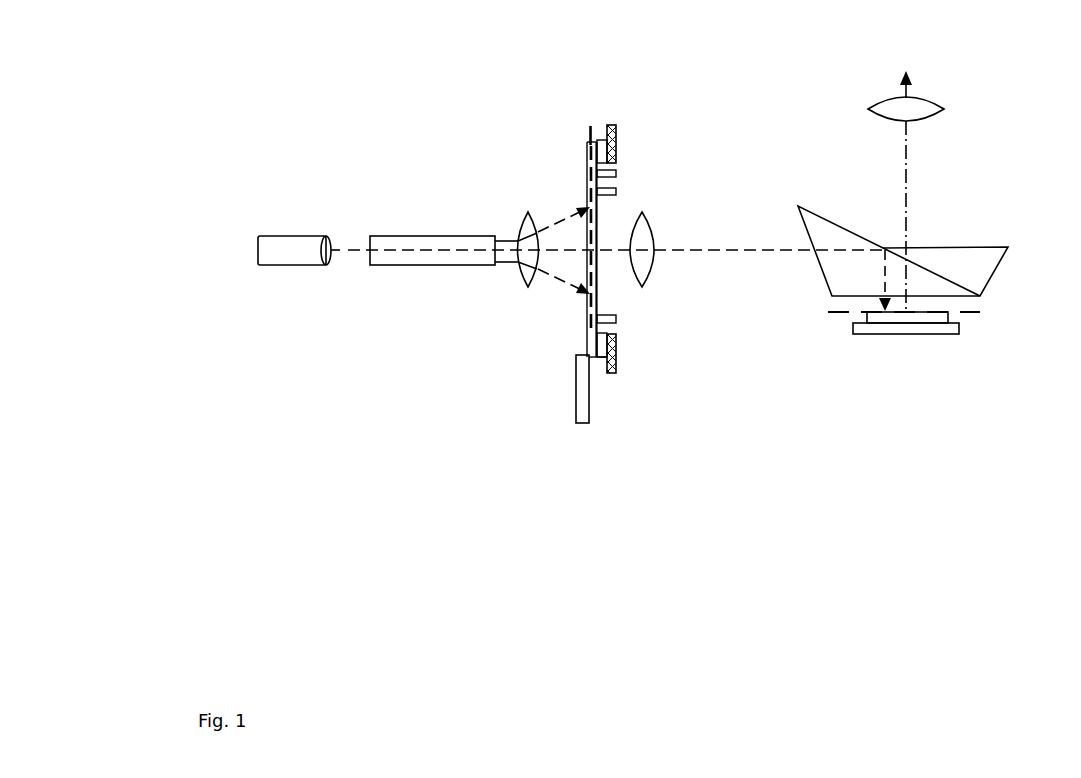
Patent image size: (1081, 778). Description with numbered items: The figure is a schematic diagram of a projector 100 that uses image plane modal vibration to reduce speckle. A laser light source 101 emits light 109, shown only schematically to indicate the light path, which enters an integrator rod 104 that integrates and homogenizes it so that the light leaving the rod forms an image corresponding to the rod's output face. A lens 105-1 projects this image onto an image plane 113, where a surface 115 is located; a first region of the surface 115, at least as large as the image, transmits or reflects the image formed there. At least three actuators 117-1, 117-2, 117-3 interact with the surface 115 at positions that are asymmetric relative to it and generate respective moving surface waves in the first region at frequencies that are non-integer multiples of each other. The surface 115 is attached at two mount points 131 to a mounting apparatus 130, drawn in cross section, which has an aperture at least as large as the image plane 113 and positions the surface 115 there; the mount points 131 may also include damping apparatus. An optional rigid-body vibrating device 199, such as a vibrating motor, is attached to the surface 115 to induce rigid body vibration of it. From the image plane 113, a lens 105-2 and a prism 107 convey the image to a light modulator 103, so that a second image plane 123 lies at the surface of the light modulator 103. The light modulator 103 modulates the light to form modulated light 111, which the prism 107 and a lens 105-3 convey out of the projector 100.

The projector 100 is at (320, 463).
The laser light source 101 is at (314, 265).
The light modulator 103 is at (893, 335).
The integrator rod 104 is at (433, 262).
The lens 105-1 is at (523, 280).
The lens 105-2 is at (647, 278).
The lens 105-3 is at (869, 110).
The prism 107 is at (1000, 247).
The light 109 is at (357, 252).
The modulated light 111 is at (907, 170).
The image plane 113 is at (588, 136).
The surface 115 is at (587, 323).
The actuator 117-1 is at (616, 173).
The actuator 117-2 is at (616, 192).
The actuator 117-3 is at (617, 320).
The second image plane 123 is at (982, 312).
The mounting apparatus 130 is at (617, 134).
The mount points 131 is at (600, 140).
The rigid-body vibrating device 199 is at (577, 382).